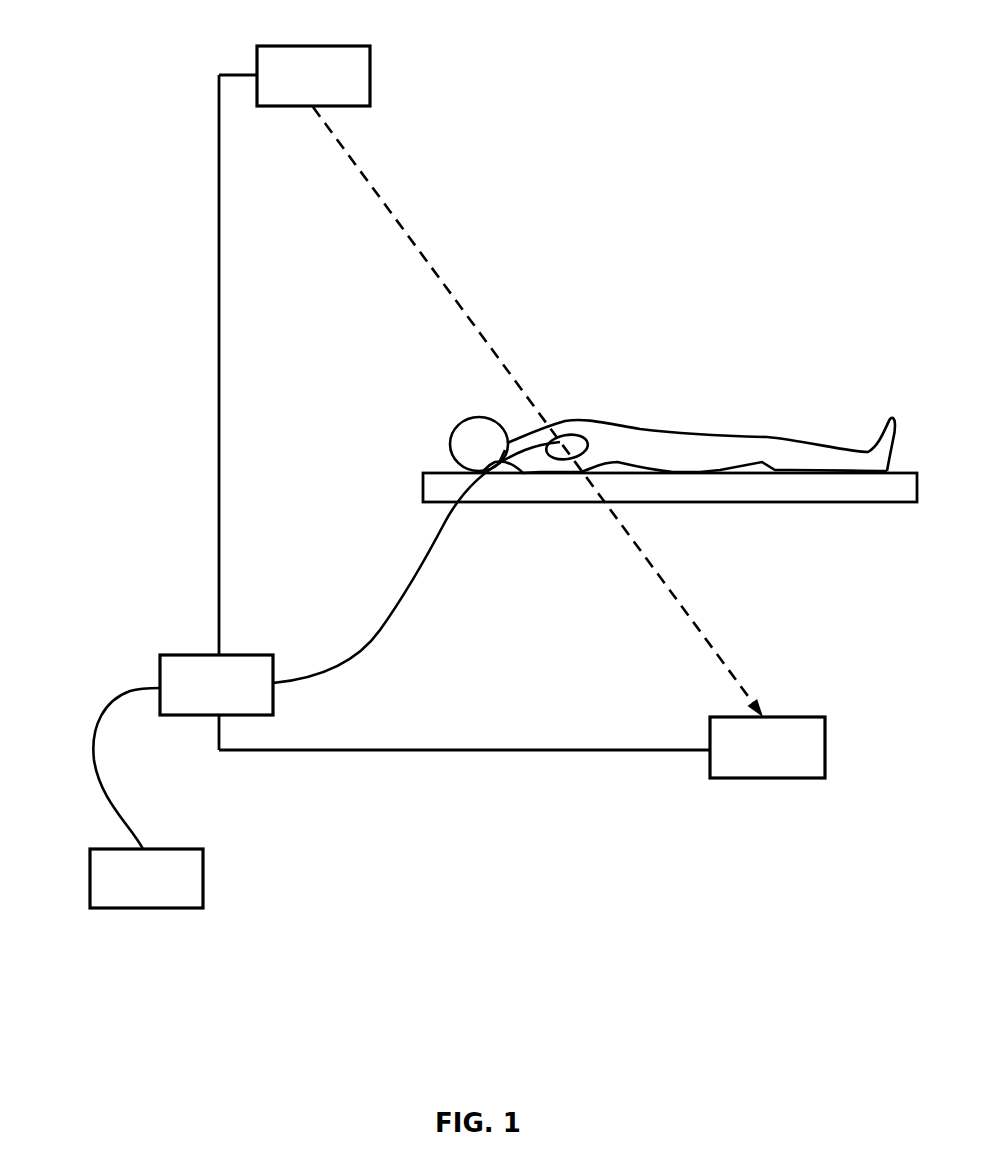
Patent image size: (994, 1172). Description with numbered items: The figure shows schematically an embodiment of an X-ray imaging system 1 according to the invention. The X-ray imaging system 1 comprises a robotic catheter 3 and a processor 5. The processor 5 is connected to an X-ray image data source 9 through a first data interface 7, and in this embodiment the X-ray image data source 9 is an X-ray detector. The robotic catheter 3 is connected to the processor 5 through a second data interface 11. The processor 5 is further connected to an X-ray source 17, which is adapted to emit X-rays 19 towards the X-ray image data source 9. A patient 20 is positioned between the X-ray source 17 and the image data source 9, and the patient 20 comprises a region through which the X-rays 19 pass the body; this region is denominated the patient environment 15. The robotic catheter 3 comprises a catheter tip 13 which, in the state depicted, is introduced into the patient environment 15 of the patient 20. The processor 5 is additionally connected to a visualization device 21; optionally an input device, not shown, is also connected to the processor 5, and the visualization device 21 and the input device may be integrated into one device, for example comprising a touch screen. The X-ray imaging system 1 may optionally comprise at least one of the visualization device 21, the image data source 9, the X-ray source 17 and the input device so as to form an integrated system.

The X-ray imaging system 1 is at (178, 600).
The robotic catheter 3 is at (408, 567).
The processor 5 is at (243, 716).
The first data interface 7 is at (208, 724).
The X-ray image data source 9 is at (787, 778).
The second data interface 11 is at (285, 697).
The catheter tip 13 is at (543, 457).
The patient environment 15 is at (590, 432).
The X-ray source 17 is at (370, 70).
The X-rays 19 is at (443, 283).
The patient 20 is at (725, 445).
The visualization device 21 is at (169, 908).